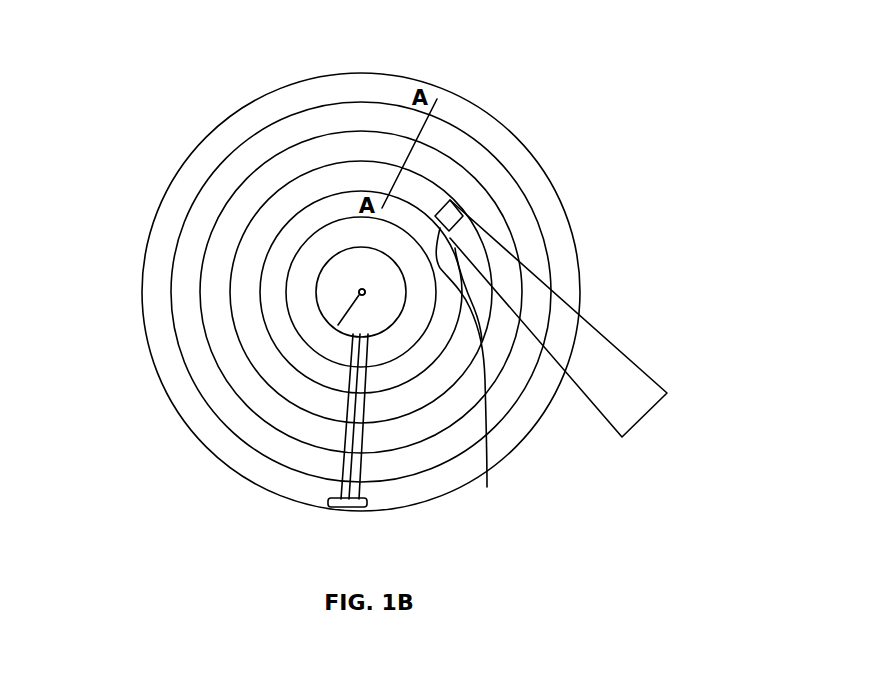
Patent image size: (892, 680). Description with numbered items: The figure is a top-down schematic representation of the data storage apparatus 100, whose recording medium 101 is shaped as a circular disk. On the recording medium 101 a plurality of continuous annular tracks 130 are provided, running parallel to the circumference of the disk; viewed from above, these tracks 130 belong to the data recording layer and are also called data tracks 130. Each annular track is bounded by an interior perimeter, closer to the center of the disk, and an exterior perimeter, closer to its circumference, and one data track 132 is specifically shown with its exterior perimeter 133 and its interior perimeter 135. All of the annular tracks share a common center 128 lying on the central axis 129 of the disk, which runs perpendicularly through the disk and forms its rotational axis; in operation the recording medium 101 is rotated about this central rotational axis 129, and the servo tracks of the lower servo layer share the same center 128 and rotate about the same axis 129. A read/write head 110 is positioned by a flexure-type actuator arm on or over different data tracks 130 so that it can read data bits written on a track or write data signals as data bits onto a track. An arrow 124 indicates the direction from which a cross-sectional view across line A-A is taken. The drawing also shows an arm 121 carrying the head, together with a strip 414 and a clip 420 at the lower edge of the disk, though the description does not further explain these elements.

The data storage apparatus 100 is at (662, 101).
The recording medium 101 is at (564, 102).
The read/write head 110 is at (474, 371).
The arm 121 is at (615, 368).
The arrow 124 is at (432, 167).
The common center 128 is at (338, 325).
The central axis 129 is at (362, 292).
The annular tracks 130 is at (213, 125).
The data track 132 is at (245, 208).
The exterior perimeter 133 is at (200, 282).
The interior perimeter 135 is at (233, 332).
The strip 414 is at (363, 507).
The clip 420 is at (336, 500).